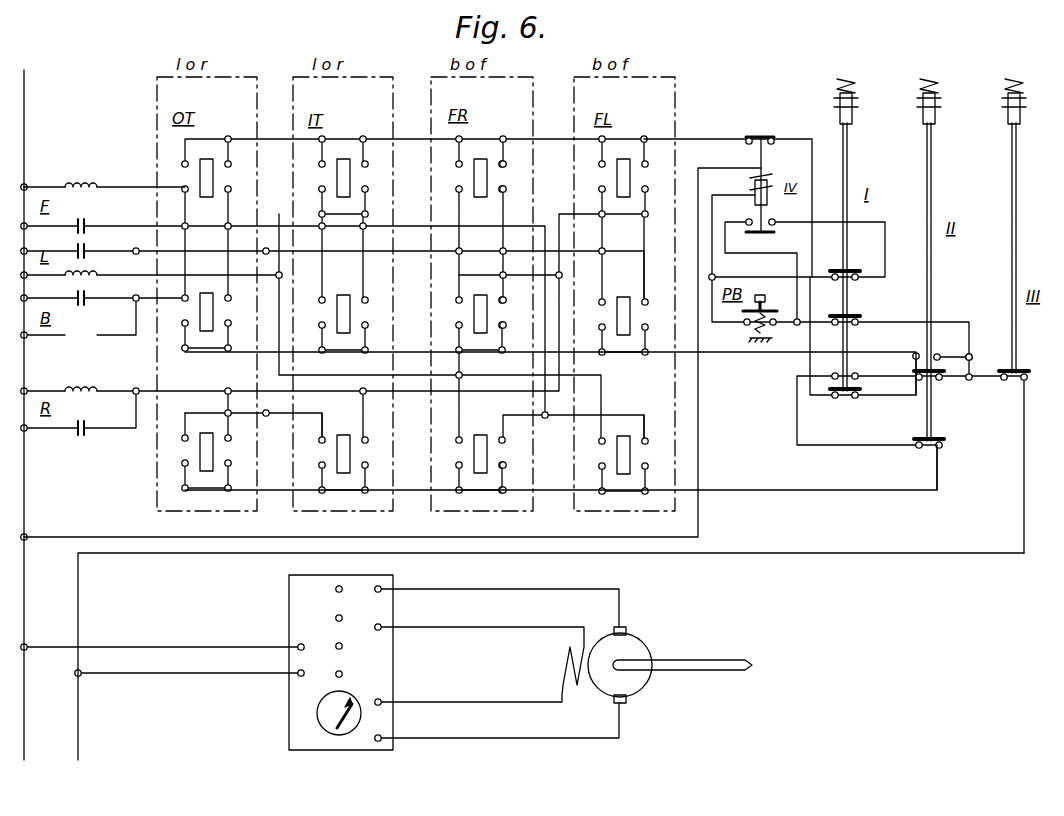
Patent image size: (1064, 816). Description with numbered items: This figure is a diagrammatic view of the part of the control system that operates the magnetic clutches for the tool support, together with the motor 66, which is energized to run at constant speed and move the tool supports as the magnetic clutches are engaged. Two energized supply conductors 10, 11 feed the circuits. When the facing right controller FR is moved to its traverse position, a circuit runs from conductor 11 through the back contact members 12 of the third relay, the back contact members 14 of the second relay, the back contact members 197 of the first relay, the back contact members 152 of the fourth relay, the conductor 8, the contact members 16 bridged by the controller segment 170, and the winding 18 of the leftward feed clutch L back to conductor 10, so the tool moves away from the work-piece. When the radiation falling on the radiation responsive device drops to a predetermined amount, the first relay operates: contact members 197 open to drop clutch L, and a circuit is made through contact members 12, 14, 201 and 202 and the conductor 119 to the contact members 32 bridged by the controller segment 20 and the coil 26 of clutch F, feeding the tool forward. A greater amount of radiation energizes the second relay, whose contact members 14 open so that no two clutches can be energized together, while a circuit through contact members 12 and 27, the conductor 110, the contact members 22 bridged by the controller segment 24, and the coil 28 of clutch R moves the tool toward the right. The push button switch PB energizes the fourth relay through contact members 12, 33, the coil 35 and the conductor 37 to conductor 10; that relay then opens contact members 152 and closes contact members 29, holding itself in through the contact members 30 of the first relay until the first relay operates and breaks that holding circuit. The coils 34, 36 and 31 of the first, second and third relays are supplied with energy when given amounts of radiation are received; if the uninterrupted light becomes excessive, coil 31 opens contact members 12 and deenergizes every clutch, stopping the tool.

The conductor 8 is at (706, 142).
The conductor 10 is at (27, 620).
The conductor 11 is at (1010, 530).
The back contact members 12 is at (1026, 382).
The back contact members 14 is at (936, 382).
The contact members 16 is at (506, 182).
The winding 18 is at (95, 273).
The controller segment 20 is at (482, 440).
The contact members 22 is at (500, 313).
The controller segment 24 is at (470, 313).
The coil 26 is at (85, 192).
The contact members 27 is at (937, 355).
The coil 28 is at (88, 388).
The contact members 29 is at (775, 222).
The contact members 30 is at (848, 269).
The coil 31 is at (1022, 108).
The contact members 32 is at (497, 453).
The contact members 33 is at (858, 315).
The coil 34 is at (856, 95).
The coil 35 is at (770, 178).
The coil 36 is at (940, 100).
The conductor 37 is at (700, 535).
The motor 66 is at (636, 642).
The conductor 110 is at (740, 354).
The conductor 119 is at (778, 490).
The back contact members 152 is at (765, 136).
The controller segment 170 is at (474, 186).
The back contact members 197 is at (843, 398).
The contact members 201 is at (858, 378).
The contact members 202 is at (942, 449).